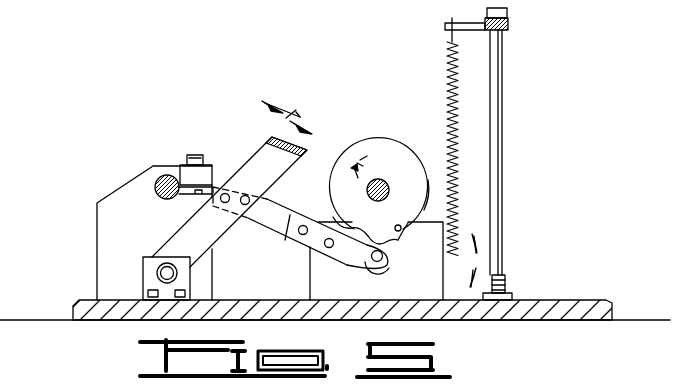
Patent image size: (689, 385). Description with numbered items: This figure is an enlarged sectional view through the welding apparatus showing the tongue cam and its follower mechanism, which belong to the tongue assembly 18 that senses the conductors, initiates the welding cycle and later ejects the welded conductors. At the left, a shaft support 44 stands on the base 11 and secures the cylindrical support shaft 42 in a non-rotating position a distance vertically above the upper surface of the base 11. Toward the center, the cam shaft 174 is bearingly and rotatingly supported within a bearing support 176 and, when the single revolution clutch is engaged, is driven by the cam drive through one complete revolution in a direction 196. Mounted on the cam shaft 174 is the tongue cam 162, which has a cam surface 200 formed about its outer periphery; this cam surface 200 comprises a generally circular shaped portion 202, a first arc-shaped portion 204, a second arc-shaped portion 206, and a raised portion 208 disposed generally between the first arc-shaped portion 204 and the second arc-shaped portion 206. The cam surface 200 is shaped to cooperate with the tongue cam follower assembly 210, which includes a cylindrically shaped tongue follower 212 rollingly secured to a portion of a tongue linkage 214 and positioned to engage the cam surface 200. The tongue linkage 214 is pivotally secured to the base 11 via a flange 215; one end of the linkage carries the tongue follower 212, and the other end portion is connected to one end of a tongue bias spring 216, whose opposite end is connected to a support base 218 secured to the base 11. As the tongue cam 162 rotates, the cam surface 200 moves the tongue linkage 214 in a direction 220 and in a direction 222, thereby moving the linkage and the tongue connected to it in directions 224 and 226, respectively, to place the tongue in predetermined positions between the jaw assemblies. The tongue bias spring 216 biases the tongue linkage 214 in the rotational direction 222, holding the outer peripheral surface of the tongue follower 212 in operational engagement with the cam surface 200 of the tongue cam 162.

The base 11 is at (562, 312).
The tongue assembly 18 is at (220, 144).
The support shaft 42 is at (165, 175).
The shaft support 44 is at (113, 207).
The tongue cam 162 is at (404, 163).
The cam shaft 174 is at (389, 187).
The bearing support 176 is at (422, 290).
The direction 196 is at (362, 150).
The cam surface 200 is at (438, 172).
The generally circular shaped portion 202 is at (430, 192).
The first arc-shaped portion 204 is at (353, 178).
The second arc-shaped portion 206 is at (398, 225).
The raised portion 208 is at (380, 234).
The tongue cam follower assembly 210 is at (240, 124).
The tongue follower 212 is at (380, 268).
The tongue linkage 214 is at (257, 225).
The flange 215 is at (150, 272).
The tongue bias spring 216 is at (458, 162).
The support base 218 is at (497, 82).
The direction 220 is at (478, 251).
The direction 222 is at (478, 272).
The direction 224 is at (298, 112).
The direction 226 is at (283, 115).